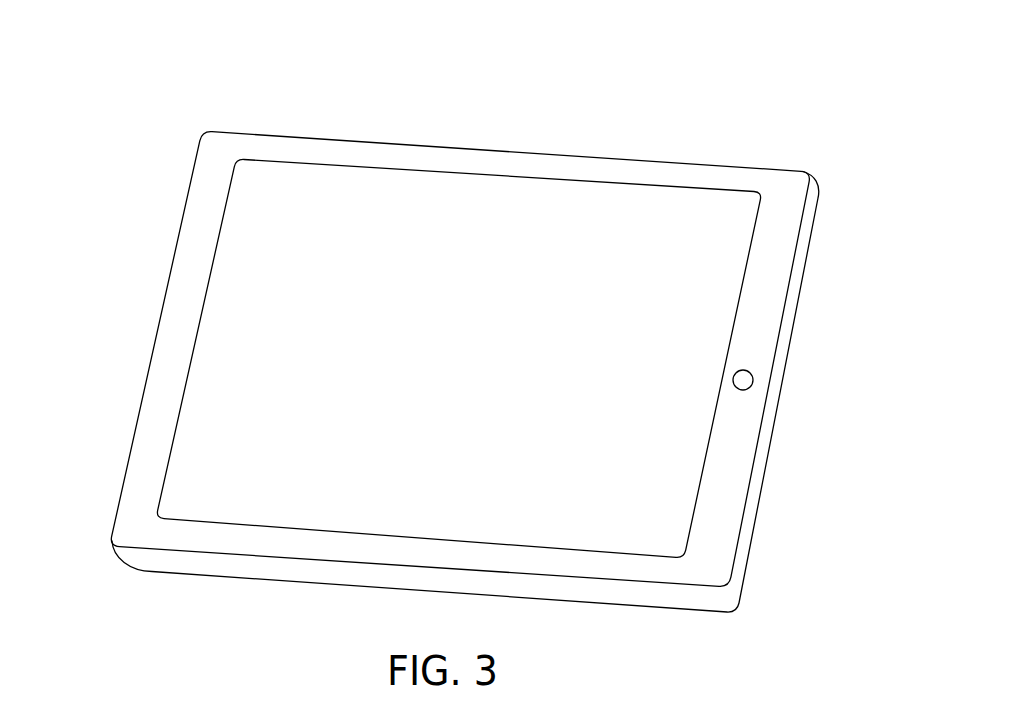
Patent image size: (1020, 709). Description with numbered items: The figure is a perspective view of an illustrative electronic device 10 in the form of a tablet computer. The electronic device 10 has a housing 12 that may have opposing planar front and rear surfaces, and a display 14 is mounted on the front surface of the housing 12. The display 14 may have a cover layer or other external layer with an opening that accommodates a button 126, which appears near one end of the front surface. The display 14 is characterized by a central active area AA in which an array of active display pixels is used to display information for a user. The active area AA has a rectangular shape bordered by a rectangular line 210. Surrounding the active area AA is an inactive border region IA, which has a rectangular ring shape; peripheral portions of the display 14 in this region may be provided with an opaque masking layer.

The electronic device 10 is at (759, 77).
The housing 12 is at (563, 153).
The display 14 is at (630, 212).
The button 126 is at (754, 377).
The rectangular line 210 is at (463, 172).
The inactive border region IA is at (325, 150).
The active area AA is at (383, 197).